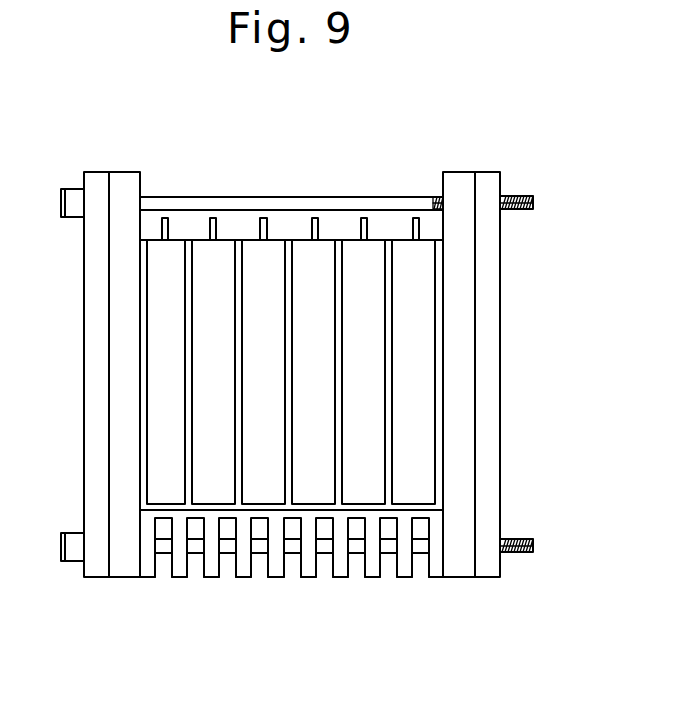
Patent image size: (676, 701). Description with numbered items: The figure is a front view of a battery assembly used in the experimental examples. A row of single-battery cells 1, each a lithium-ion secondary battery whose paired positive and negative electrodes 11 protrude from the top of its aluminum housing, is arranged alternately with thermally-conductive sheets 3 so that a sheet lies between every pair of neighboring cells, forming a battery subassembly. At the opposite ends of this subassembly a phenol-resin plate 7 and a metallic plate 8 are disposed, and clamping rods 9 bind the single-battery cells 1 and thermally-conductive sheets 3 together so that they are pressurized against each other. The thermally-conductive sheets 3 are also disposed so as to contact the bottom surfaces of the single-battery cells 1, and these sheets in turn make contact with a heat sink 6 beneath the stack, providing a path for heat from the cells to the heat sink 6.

The single-battery cell 1 is at (340, 394).
The thermally-conductive sheet 3 is at (293, 277).
The heat sink 6 is at (277, 567).
The phenol-resin plate 7 is at (127, 173).
The metallic plate 8 is at (97, 178).
The clamping rod 9 is at (238, 198).
The electrode 11 is at (363, 228).